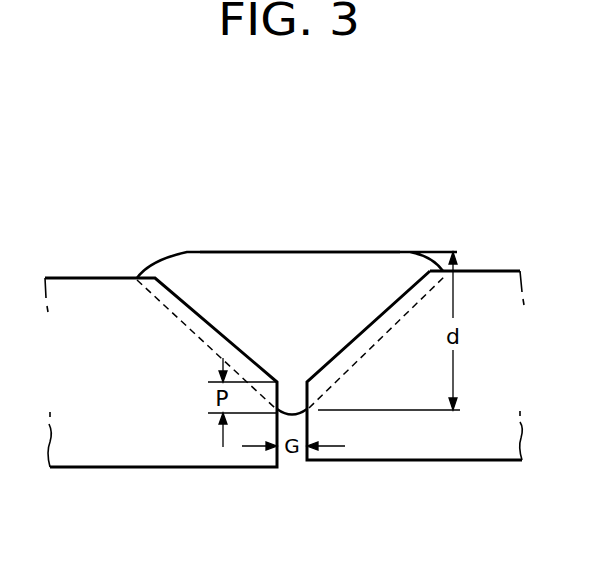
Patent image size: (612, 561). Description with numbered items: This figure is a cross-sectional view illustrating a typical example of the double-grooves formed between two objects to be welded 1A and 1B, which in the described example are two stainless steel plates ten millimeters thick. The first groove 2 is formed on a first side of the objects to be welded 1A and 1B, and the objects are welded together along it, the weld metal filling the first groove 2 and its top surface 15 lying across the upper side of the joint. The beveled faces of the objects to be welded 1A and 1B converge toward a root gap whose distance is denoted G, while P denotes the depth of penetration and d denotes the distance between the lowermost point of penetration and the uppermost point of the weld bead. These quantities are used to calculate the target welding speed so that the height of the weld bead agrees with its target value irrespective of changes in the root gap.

The object to be welded 1A is at (92, 295).
The object to be welded 1B is at (491, 283).
The first groove 2 is at (243, 278).
The top surface of weld bead 15 is at (312, 250).